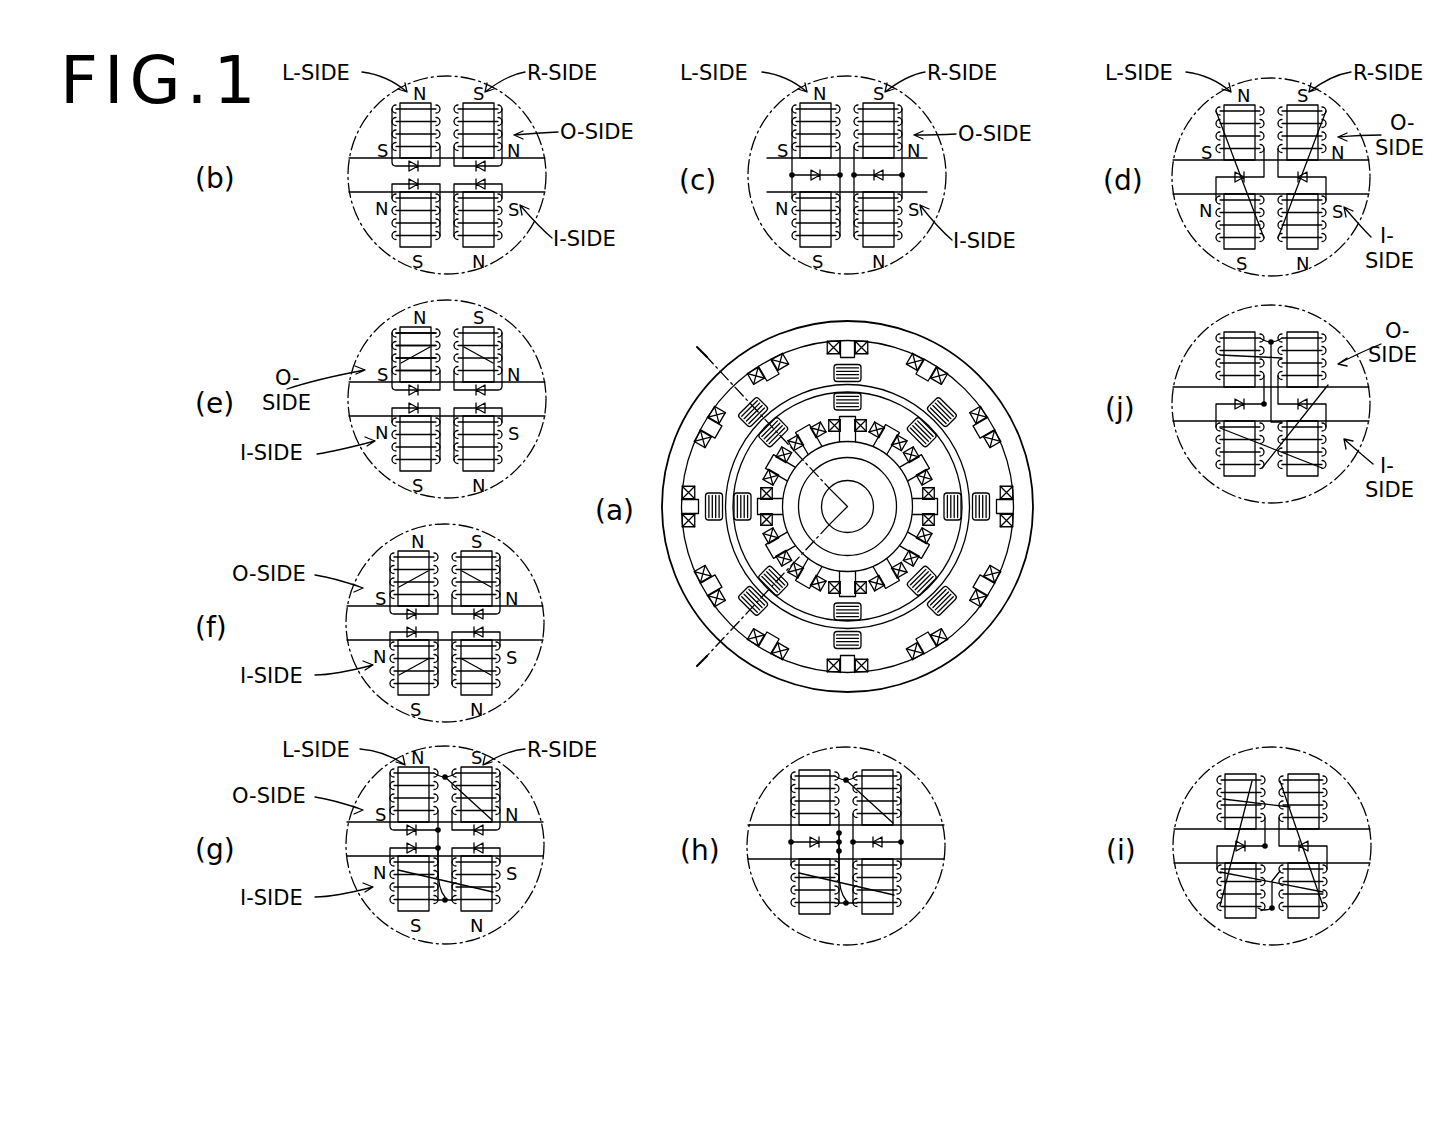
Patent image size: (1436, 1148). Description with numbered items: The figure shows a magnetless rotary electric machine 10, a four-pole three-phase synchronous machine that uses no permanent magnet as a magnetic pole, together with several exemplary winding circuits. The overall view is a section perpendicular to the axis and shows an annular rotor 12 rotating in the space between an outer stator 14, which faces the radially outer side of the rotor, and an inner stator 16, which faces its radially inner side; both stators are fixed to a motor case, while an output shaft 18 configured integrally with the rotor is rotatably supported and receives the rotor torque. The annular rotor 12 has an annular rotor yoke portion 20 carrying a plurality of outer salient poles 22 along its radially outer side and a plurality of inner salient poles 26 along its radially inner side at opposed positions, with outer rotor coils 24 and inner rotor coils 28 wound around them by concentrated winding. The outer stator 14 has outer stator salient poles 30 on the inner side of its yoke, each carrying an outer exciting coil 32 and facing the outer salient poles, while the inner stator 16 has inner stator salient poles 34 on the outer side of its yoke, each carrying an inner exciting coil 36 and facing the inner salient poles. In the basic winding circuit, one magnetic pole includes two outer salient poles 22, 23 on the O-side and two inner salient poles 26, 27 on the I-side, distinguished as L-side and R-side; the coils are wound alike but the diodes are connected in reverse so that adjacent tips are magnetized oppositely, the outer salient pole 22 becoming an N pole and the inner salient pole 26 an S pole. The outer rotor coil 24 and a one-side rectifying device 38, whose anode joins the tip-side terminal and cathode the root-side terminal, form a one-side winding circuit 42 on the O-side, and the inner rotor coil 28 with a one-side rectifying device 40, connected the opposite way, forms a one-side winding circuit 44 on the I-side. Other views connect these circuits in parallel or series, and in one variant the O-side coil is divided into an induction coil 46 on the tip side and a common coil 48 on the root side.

The magnetless rotary electric machine 10 is at (677, 407).
The annular rotor 12 is at (858, 505).
The outer stator 14 is at (908, 578).
The inner stator 16 is at (677, 362).
The output shaft 18 is at (949, 498).
The rotor yoke portion 20 is at (659, 352).
The outer salient pole 22 is at (667, 257).
The outer salient pole 23 is at (510, 234).
The outer rotor coil 24 is at (636, 257).
The inner salient pole 26 is at (692, 321).
The inner salient pole 27 is at (508, 237).
The inner rotor coil 28 is at (681, 321).
The outer stator salient pole 30 is at (951, 671).
The outer exciting coil 32 is at (964, 655).
The inner stator salient pole 34 is at (976, 563).
The inner exciting coil 36 is at (974, 604).
The one-side rectifying device 38 is at (406, 140).
The one-side rectifying device 40 is at (406, 203).
The one-side winding circuit 42 is at (636, 257).
The one-side winding circuit 44 is at (657, 310).
The induction coil 46 is at (370, 330).
The common coil 48 is at (370, 355).